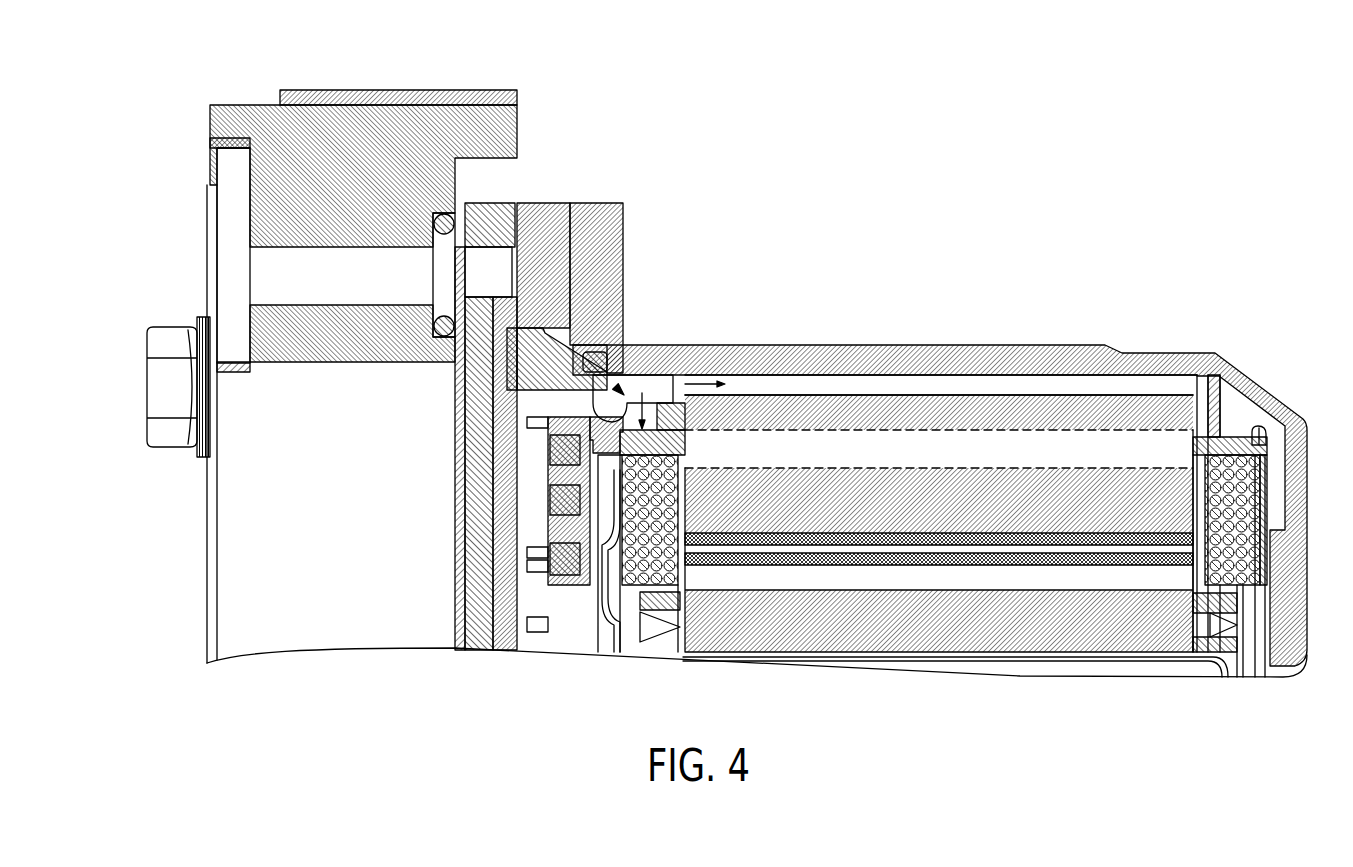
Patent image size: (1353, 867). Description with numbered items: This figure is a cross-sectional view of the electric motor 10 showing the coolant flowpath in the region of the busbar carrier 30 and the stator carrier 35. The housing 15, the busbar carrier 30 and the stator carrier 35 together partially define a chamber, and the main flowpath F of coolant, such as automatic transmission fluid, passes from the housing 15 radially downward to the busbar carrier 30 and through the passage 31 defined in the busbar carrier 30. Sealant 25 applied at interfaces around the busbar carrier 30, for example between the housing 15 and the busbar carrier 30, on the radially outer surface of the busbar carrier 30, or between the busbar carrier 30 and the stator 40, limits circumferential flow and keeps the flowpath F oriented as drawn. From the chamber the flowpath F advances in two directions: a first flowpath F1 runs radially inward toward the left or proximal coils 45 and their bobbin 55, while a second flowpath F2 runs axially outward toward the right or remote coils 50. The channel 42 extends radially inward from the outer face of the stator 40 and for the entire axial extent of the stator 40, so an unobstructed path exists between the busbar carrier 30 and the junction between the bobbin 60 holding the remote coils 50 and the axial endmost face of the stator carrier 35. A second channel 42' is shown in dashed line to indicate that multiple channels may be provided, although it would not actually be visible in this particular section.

The electric motor 10 is at (617, 115).
The housing 15 is at (500, 127).
The sealant 25 is at (513, 346).
The busbar carrier 30 is at (532, 333).
The passage 31 is at (633, 412).
The stator carrier 35 is at (1018, 345).
The stator 40 is at (1110, 405).
The channel 42 is at (941, 330).
The second channel 42' is at (939, 366).
The proximal coils 45 is at (685, 480).
The remote coils 50 is at (1258, 447).
The bobbin 55 is at (690, 468).
The bobbin 60 is at (1235, 430).
The flowpath F is at (621, 392).
The first flowpath F1 is at (648, 385).
The second flowpath F2 is at (690, 383).